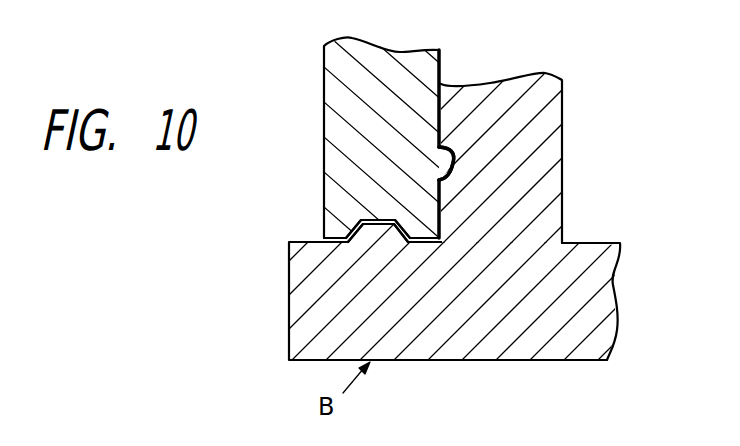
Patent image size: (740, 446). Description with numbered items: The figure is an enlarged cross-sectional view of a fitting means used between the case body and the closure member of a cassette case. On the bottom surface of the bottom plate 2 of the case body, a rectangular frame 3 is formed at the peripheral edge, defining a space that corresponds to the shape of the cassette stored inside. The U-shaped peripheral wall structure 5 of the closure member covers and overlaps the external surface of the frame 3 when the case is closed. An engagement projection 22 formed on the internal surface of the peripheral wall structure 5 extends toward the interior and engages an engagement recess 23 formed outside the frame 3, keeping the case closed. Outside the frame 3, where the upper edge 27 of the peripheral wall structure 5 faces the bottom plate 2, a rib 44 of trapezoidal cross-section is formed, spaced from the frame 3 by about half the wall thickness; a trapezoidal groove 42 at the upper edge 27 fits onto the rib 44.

The bottom plate 2 is at (516, 353).
The rectangular frame 3 is at (550, 140).
The peripheral wall structure 5 is at (332, 77).
The engagement projection 22 is at (453, 160).
The engagement recess 23 is at (452, 160).
The upper edge 27 is at (413, 244).
The groove 42 is at (380, 228).
The rib 44 is at (352, 222).